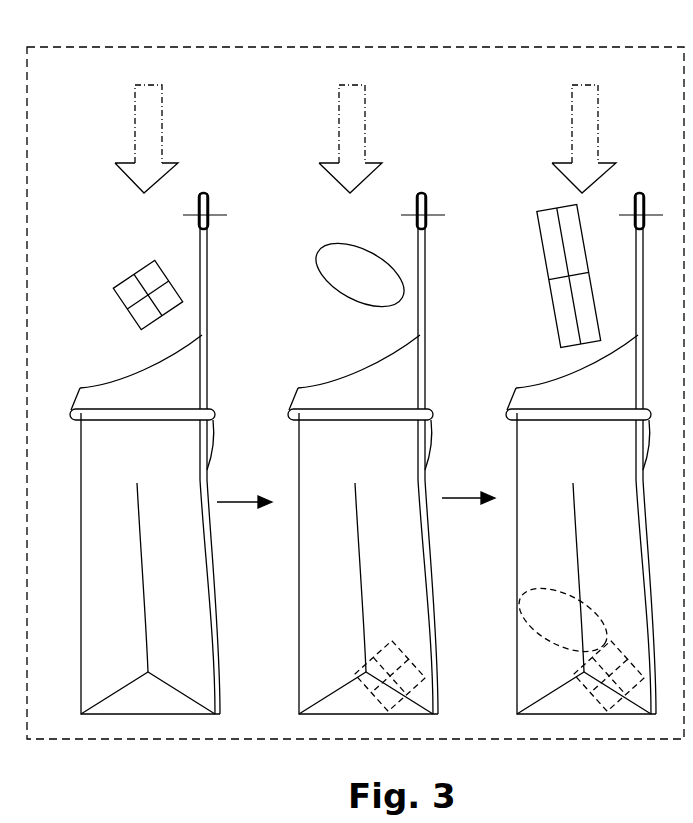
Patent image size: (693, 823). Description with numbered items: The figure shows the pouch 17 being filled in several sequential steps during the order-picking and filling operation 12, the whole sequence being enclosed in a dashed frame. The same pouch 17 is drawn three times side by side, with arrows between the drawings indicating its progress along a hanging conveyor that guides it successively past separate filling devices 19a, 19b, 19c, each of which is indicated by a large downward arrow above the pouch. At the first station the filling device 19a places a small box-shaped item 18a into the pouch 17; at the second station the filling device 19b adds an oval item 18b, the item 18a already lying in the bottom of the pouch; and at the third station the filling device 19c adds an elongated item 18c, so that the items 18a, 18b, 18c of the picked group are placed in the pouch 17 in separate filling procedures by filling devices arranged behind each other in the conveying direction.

The order-picking and filling operation 12 is at (478, 48).
The pouch 17 is at (137, 697).
The item 18a is at (153, 278).
The item 18b is at (340, 261).
The item 18c is at (560, 310).
The filling device 19a is at (146, 137).
The filling device 19b is at (351, 142).
The filling device 19c is at (582, 147).